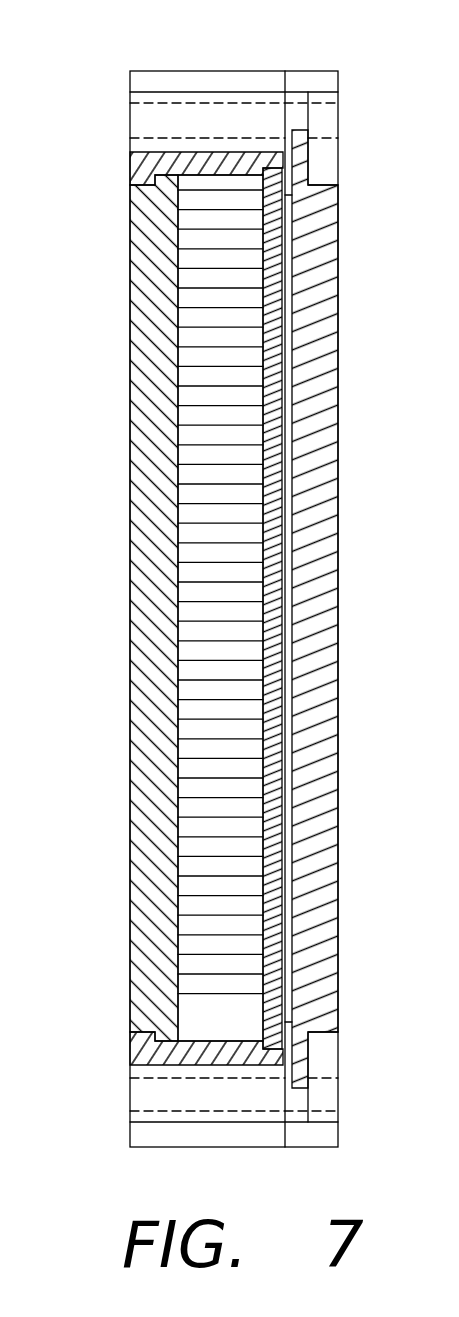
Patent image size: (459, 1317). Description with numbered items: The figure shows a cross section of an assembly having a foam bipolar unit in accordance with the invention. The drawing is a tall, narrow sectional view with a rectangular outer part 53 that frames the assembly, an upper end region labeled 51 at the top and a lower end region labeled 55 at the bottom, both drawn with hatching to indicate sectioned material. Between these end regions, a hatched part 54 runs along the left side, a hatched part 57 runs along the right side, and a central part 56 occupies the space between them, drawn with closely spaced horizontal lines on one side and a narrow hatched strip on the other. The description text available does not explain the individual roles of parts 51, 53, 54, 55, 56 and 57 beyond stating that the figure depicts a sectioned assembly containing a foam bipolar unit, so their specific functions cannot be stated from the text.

The upper end cap 51 is at (131, 120).
The housing 53 is at (323, 86).
The outer sleeve 54 is at (130, 393).
The lower end cap 55 is at (262, 1023).
The coil winding 56 is at (187, 690).
The core 57 is at (338, 387).